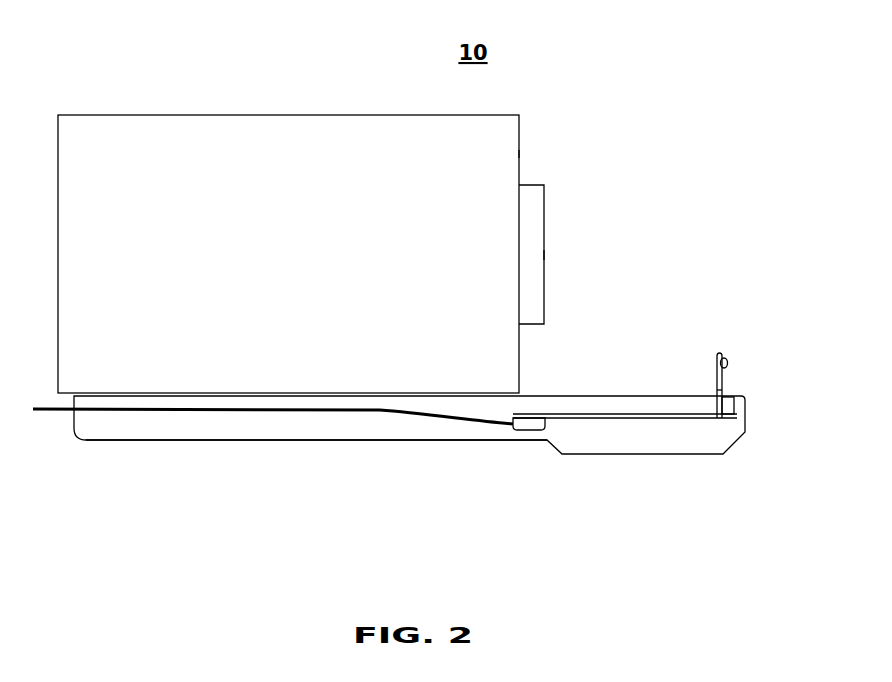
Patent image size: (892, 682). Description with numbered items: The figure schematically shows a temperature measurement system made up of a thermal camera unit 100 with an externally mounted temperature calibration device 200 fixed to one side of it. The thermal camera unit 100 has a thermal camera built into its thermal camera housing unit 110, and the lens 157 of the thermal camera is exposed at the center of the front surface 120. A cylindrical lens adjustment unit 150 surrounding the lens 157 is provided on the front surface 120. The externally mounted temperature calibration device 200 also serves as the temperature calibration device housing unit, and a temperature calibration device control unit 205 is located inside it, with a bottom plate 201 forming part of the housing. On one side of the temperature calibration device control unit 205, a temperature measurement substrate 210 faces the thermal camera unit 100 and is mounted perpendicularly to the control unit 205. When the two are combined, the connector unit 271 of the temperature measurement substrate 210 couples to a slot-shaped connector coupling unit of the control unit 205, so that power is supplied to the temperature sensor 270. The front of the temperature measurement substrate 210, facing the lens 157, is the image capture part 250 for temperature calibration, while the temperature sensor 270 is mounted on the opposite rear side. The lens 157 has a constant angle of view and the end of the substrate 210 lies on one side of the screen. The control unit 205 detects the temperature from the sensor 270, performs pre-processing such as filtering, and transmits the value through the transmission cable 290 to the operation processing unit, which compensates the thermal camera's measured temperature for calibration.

The thermal camera unit 100 is at (187, 115).
The thermal camera housing unit 110 is at (304, 122).
The front surface 120 is at (519, 154).
The lens adjustment unit 150 is at (532, 217).
The lens 157 is at (545, 255).
The externally mounted temperature calibration device 200 is at (410, 443).
The bottom plate 201 is at (282, 441).
The temperature calibration device control unit 205 is at (612, 420).
The temperature measurement substrate 210 is at (715, 370).
The image capture part for temperature calibration 250 is at (718, 385).
The temperature sensor 270 is at (727, 360).
The connector unit 271 is at (730, 405).
The transmission cable 290 is at (194, 410).